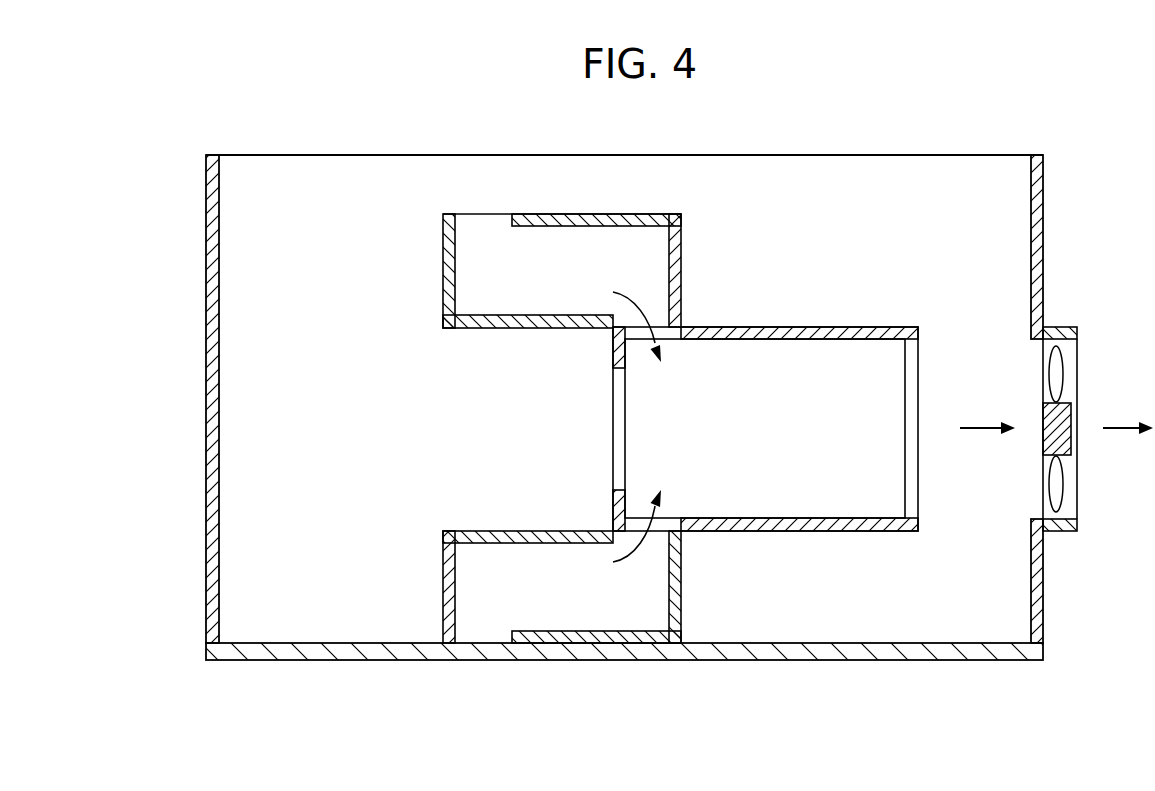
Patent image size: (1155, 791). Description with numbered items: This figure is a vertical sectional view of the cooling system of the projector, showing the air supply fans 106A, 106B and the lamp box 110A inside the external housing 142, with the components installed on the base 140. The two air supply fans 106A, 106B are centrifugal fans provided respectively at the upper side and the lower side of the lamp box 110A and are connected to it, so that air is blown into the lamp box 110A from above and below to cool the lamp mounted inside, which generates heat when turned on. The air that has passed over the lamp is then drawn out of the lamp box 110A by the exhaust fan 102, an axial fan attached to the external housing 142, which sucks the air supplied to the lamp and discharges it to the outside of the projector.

The external housing 142 is at (213, 300).
The base 140 is at (400, 654).
The exhaust fan 102 is at (1050, 329).
The air supply fan 106A is at (416, 264).
The air supply fan 106B is at (491, 508).
The lamp box 110A is at (799, 565).